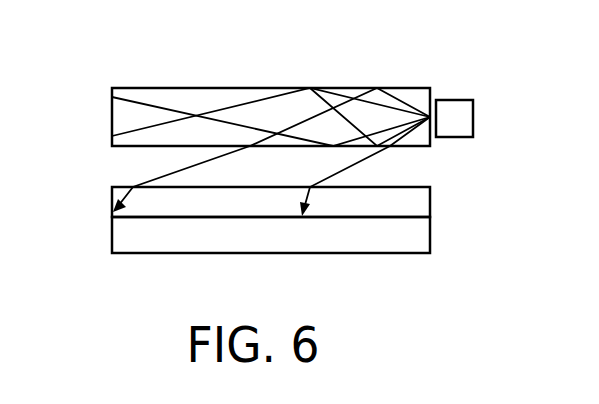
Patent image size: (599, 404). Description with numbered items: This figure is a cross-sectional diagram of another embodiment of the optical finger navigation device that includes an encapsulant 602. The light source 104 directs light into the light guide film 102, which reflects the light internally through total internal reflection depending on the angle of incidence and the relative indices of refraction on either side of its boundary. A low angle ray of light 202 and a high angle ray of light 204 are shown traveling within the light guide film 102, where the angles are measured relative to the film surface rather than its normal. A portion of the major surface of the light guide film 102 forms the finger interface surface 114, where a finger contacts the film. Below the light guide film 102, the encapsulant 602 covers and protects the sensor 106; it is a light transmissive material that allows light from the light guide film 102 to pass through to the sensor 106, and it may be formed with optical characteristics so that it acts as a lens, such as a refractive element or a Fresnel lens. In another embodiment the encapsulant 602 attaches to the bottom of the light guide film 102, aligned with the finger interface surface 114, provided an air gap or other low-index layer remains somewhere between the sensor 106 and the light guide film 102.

The light guide film 102 is at (111, 118).
The light source 104 is at (476, 118).
The sensor 106 is at (111, 235).
The finger interface surface 114 is at (173, 89).
The low angle ray of light 202 is at (247, 103).
The high angle ray of light 204 is at (335, 107).
The encapsulant 602 is at (111, 205).